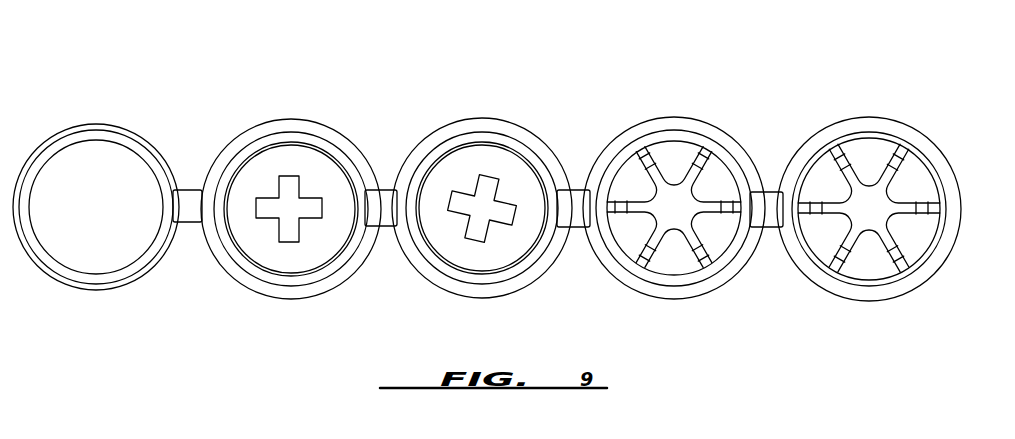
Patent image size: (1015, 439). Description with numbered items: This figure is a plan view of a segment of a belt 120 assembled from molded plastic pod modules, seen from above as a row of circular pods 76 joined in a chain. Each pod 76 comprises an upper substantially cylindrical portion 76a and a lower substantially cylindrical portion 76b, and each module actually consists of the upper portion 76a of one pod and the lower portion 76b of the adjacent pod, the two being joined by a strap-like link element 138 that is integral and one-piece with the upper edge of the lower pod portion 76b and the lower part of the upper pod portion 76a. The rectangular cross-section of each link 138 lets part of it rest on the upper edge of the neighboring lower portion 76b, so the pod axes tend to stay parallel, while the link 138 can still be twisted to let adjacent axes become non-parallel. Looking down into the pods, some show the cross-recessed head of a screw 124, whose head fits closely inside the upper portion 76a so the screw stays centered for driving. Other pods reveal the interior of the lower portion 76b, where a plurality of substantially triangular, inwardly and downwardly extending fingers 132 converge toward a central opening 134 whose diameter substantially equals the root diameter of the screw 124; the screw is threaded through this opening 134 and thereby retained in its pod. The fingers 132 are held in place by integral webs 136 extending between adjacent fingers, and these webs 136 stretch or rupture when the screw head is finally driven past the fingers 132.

The belt 120 is at (426, 118).
The pod 76 is at (300, 118).
The upper pod portion 76a is at (58, 265).
The lower pod portion 76b is at (537, 278).
The link element 138 is at (577, 190).
The screw 124 is at (257, 243).
The fingers 132 is at (706, 178).
The opening 134 is at (666, 205).
The webs 136 is at (722, 213).